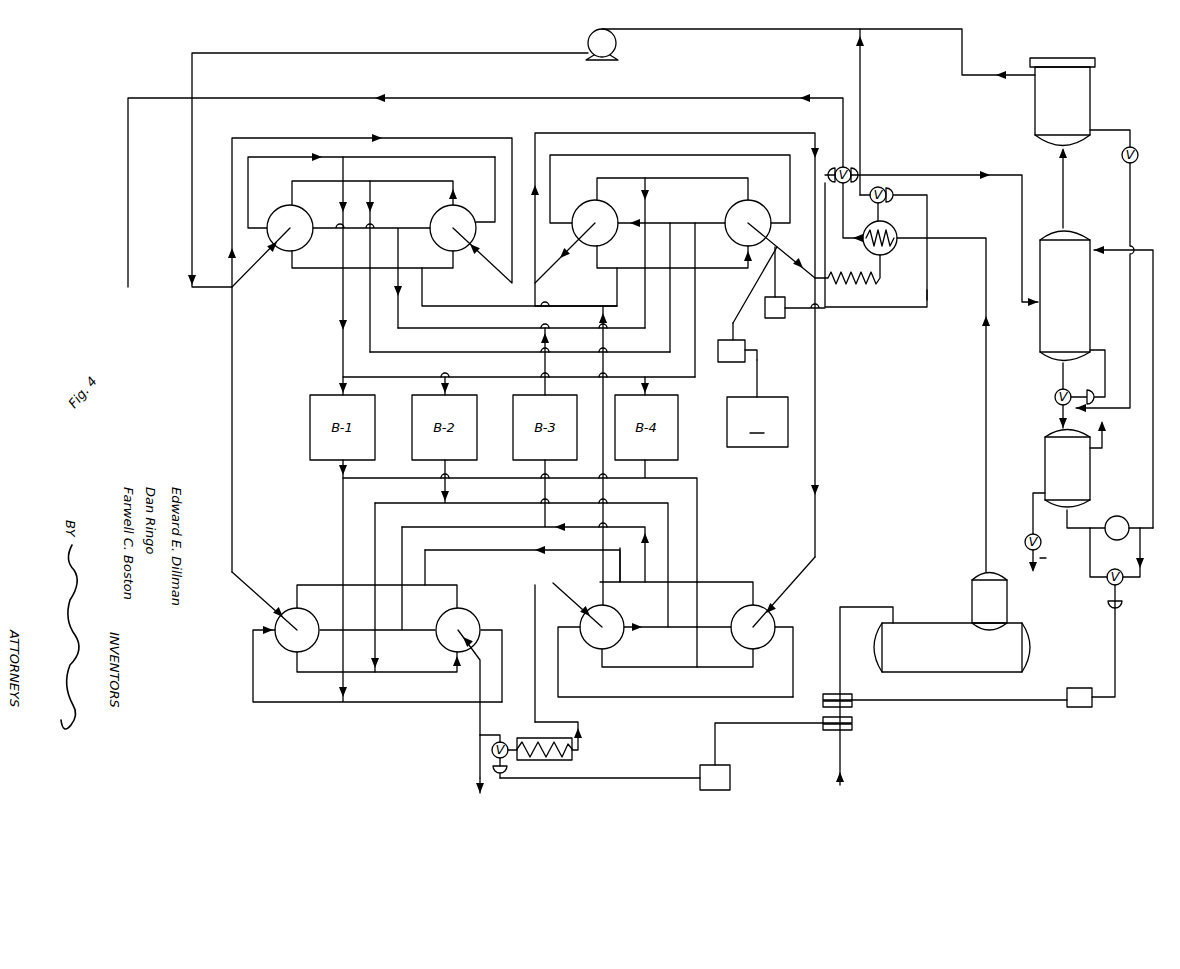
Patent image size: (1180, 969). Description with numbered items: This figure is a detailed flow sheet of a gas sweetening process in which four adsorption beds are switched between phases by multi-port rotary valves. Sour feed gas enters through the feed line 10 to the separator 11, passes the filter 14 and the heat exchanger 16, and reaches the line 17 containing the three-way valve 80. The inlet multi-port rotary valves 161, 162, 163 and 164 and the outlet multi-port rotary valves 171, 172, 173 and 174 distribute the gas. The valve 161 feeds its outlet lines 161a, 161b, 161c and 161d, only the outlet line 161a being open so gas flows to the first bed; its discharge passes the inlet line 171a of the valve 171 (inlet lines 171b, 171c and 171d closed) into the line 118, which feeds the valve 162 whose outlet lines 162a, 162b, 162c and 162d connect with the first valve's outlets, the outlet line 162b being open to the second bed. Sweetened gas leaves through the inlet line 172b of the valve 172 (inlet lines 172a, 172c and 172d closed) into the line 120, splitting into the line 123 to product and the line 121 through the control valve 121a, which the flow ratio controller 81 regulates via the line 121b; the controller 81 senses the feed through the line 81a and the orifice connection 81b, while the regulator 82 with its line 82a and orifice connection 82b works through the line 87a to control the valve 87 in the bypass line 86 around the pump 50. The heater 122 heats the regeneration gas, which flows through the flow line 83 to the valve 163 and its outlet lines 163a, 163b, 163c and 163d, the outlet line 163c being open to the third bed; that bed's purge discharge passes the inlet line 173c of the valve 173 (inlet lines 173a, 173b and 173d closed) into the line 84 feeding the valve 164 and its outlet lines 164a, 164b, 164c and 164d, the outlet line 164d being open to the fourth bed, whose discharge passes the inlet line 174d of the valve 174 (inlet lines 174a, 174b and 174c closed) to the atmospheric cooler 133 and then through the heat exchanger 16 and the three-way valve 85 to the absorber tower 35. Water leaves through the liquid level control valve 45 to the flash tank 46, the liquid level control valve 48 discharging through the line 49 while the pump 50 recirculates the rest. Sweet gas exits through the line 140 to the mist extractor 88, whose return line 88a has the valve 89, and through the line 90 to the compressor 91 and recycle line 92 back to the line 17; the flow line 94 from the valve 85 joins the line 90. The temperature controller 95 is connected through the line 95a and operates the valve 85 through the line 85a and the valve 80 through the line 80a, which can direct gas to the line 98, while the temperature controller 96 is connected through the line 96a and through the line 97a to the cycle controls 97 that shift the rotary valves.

The feed line 10 is at (845, 762).
The separator 11 is at (920, 623).
The filter 14 is at (1008, 602).
The heat exchanger 16 is at (892, 250).
The line 17 is at (128, 168).
The absorber tower 35 is at (1042, 310).
The liquid level control valve 45 is at (1055, 392).
The flash tank 46 is at (1047, 452).
The liquid level control valve 48 is at (1025, 542).
The line 49 is at (1040, 558).
The pump 50 is at (1118, 516).
The three-way valve 80 is at (841, 166).
The line 80a is at (826, 250).
The flow ratio controller 81 is at (730, 766).
The line 81a is at (713, 724).
The orifice connection 81b is at (855, 722).
The regulator 82 is at (1080, 688).
The line 82a is at (1005, 702).
The orifice connection 82b is at (855, 694).
The flow line 83 is at (535, 688).
The line 84 is at (700, 133).
The three-way valve 85 is at (872, 203).
The line 85a is at (927, 280).
The bypass line 86 is at (1143, 544).
The valve 87 is at (1125, 585).
The line 87a is at (1120, 624).
The mist extractor 88 is at (1092, 93).
The line 88a is at (1132, 204).
The valve 89 is at (1138, 159).
The line 90 is at (978, 78).
The gas circulator or compressor 91 is at (616, 40).
The line 92 is at (288, 56).
The flow line 94 is at (862, 110).
The temperature controller 95 is at (782, 318).
The line 95a is at (757, 282).
The temperature controller 96 is at (724, 360).
The line 96a is at (748, 343).
The cycle controls 97 is at (757, 422).
The line 97a is at (760, 372).
The line 98 is at (926, 170).
The line 118 is at (414, 132).
The line 120 is at (480, 722).
The line 121 is at (480, 758).
The control valve 121a is at (500, 740).
The line 121b is at (553, 780).
The heater 122 is at (575, 753).
The line 123 is at (480, 778).
The atmospheric cooler 133 is at (866, 285).
The line 140 is at (1065, 182).
The inlet multi-port rotary valve 161 is at (282, 207).
The outlet line 161a is at (255, 171).
The outlet line 161b is at (293, 184).
The outlet line 161c is at (327, 238).
The outlet line 161d is at (286, 278).
The inlet multi-port rotary valve 162 is at (466, 207).
The outlet line 162a is at (477, 229).
The outlet line 162b is at (447, 178).
The outlet line 162c is at (408, 220).
The outlet line 162d is at (456, 262).
The multi-port rotary valve 163 is at (613, 612).
The outlet line 163a is at (560, 607).
The outlet line 163b is at (606, 653).
The outlet line 163c is at (630, 631).
The outlet line 163d is at (618, 572).
The multi-port rotary valve 164 is at (766, 603).
The outlet line 164a is at (793, 624).
The outlet line 164b is at (756, 668).
The outlet line 164c is at (719, 622).
The outlet line 164d is at (731, 580).
The outlet multi-port rotary valve 171 is at (290, 606).
The inlet line 171a is at (248, 704).
The inlet line 171b is at (332, 674).
The inlet line 171c is at (330, 627).
The inlet line 171d is at (320, 584).
The outlet multi-port rotary valve 172 is at (484, 621).
The inlet line 172a is at (478, 609).
The inlet line 172b is at (452, 674).
The inlet line 172c is at (420, 631).
The inlet line 172d is at (441, 584).
The outlet multi-port rotary valve 173 is at (581, 206).
The inlet line 173a is at (553, 163).
The inlet line 173b is at (637, 178).
The inlet line 173c is at (638, 219).
The inlet line 173d is at (597, 262).
The outlet multi-port rotary valve 174 is at (762, 206).
The inlet line 174a is at (772, 226).
The inlet line 174b is at (762, 178).
The inlet line 174c is at (718, 218).
The inlet line 174d is at (735, 268).